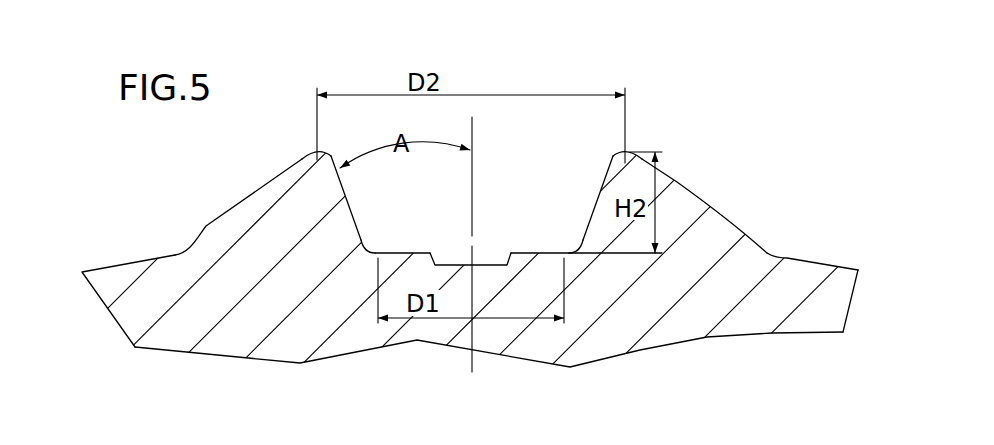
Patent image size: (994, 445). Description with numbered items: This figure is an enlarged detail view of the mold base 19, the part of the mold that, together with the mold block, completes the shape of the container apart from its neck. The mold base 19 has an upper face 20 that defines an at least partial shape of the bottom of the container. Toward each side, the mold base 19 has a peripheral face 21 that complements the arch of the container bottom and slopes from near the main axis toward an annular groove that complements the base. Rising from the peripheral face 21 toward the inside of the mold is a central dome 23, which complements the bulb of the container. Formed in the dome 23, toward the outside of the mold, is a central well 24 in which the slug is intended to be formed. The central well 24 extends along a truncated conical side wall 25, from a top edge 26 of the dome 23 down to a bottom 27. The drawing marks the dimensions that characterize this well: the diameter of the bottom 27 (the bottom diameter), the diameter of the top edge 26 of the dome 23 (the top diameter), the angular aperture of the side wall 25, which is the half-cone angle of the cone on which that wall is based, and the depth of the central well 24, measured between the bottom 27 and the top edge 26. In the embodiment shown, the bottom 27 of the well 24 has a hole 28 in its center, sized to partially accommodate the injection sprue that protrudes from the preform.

The mold base 19 is at (803, 330).
The upper face 20 is at (790, 257).
The peripheral face 21 is at (127, 262).
The central dome 23 is at (232, 208).
The central well 24 is at (350, 212).
The truncated conical side wall 25 is at (345, 200).
The top edge 26 is at (315, 163).
The bottom 27 is at (523, 252).
The hole 28 is at (460, 262).